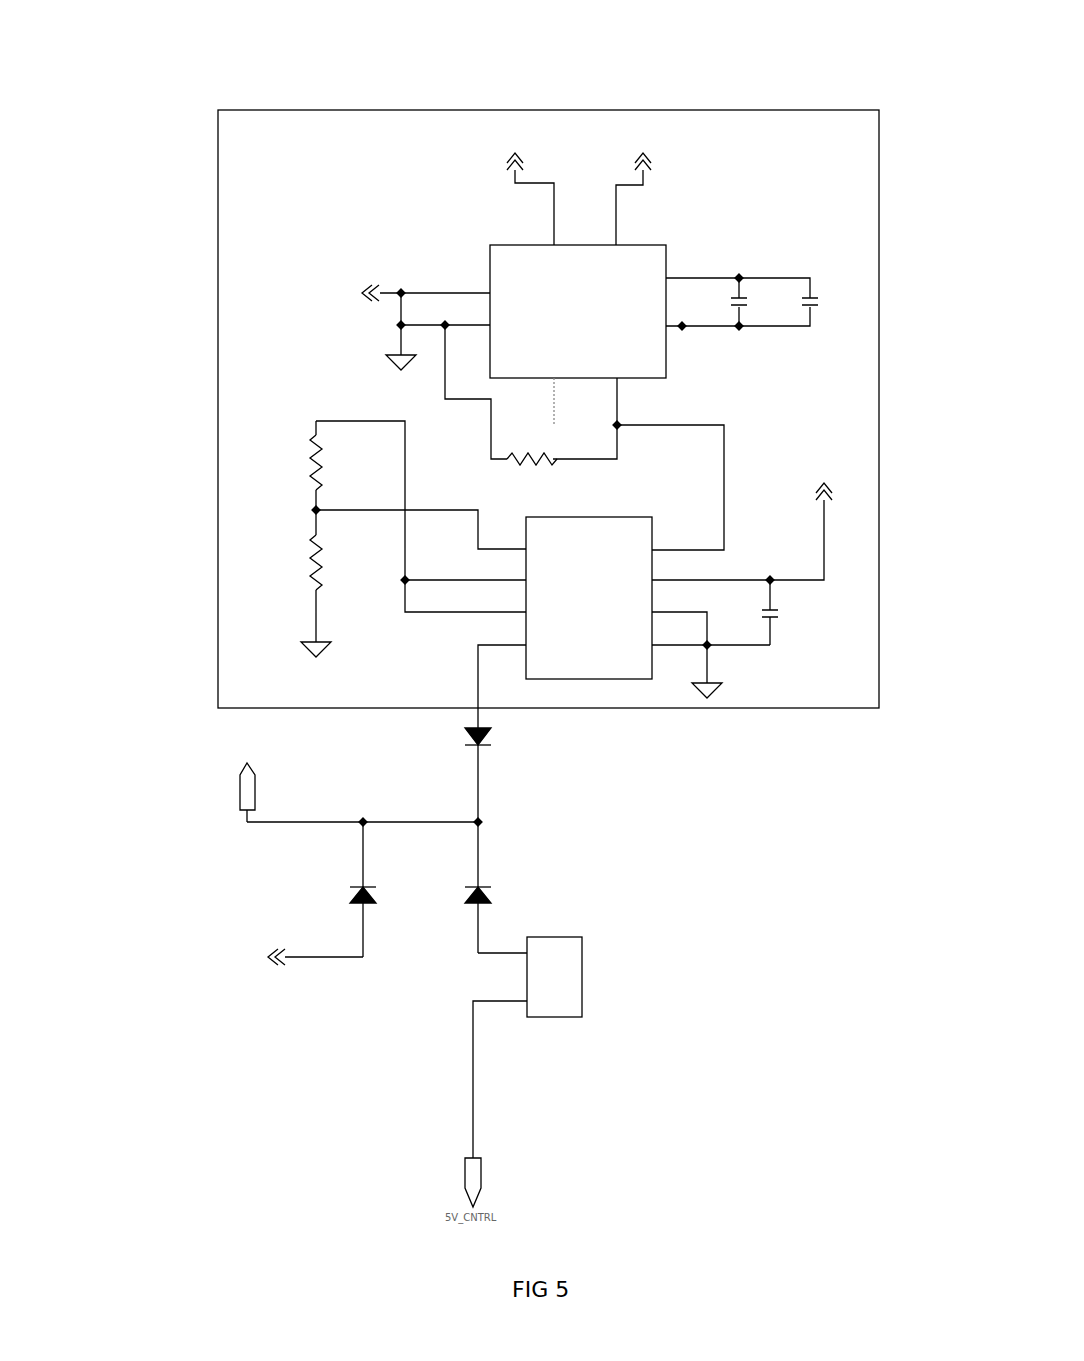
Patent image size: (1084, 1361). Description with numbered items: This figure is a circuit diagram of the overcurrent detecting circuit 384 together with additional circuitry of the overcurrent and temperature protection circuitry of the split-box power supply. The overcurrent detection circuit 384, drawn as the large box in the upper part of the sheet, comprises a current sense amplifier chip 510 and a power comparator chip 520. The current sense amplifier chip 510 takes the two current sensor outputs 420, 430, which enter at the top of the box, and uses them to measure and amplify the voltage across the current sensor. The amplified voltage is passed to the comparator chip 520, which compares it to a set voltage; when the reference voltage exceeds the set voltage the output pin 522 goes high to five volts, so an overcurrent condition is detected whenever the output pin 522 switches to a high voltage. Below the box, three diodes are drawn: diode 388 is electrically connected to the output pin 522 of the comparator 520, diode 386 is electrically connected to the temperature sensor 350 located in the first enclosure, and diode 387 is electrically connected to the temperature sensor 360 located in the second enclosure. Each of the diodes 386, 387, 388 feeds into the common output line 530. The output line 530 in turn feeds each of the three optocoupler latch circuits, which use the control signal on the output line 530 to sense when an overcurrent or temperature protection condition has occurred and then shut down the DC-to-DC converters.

The overcurrent detection circuit 384 is at (218, 265).
The current sensor output 430 is at (478, 157).
The current sensor output 420 is at (678, 150).
The current sense amplifier chip 510 is at (645, 265).
The power comparator chip 520 is at (623, 543).
The output pin 522 is at (510, 647).
The output line 530 is at (250, 787).
The diode 388 is at (490, 748).
The diode 386 is at (343, 895).
The diode 387 is at (488, 893).
The temperature sensor 350 is at (210, 957).
The temperature sensor 360 is at (560, 980).